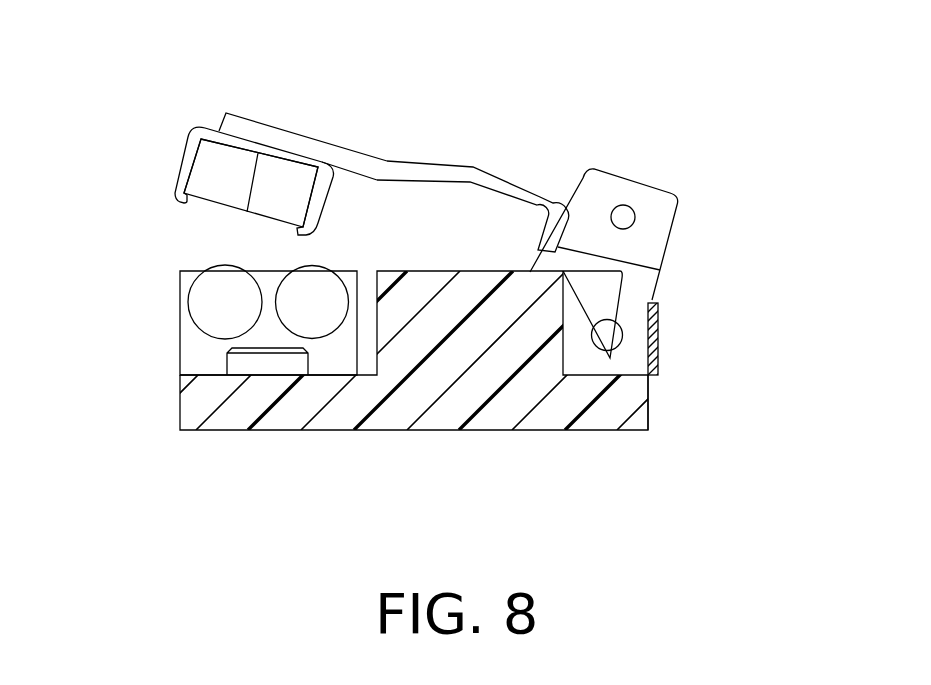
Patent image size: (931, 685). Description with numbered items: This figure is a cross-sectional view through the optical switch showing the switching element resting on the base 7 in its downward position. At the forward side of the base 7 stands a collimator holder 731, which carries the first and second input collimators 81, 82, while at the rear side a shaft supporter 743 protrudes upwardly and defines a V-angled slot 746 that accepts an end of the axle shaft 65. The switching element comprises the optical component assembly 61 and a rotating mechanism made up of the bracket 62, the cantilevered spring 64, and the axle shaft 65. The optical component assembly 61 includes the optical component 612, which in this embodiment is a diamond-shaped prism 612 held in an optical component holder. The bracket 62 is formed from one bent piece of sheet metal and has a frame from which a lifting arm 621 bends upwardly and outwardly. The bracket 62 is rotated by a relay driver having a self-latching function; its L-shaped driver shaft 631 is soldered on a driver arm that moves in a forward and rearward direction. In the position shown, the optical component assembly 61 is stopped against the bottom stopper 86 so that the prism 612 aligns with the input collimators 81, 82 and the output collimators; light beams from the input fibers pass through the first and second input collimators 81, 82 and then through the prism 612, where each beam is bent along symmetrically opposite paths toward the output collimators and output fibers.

The insulative housing 7 is at (465, 393).
The collimator holder 731 is at (180, 278).
The first input collimator 81 is at (306, 295).
The second input collimator 82 is at (222, 302).
The bottom stopper 86 is at (236, 366).
The optical component assembly 61 is at (195, 130).
The optical component 612 is at (205, 167).
The lifting arm 621 is at (293, 137).
The bracket 62 is at (557, 180).
The L-shaped driver shaft 631 is at (620, 206).
The axle shaft 65 is at (600, 331).
The V-angled slot 746 is at (622, 344).
The shaft supporter 743 is at (593, 363).
The cantilevered spring 64 is at (655, 376).